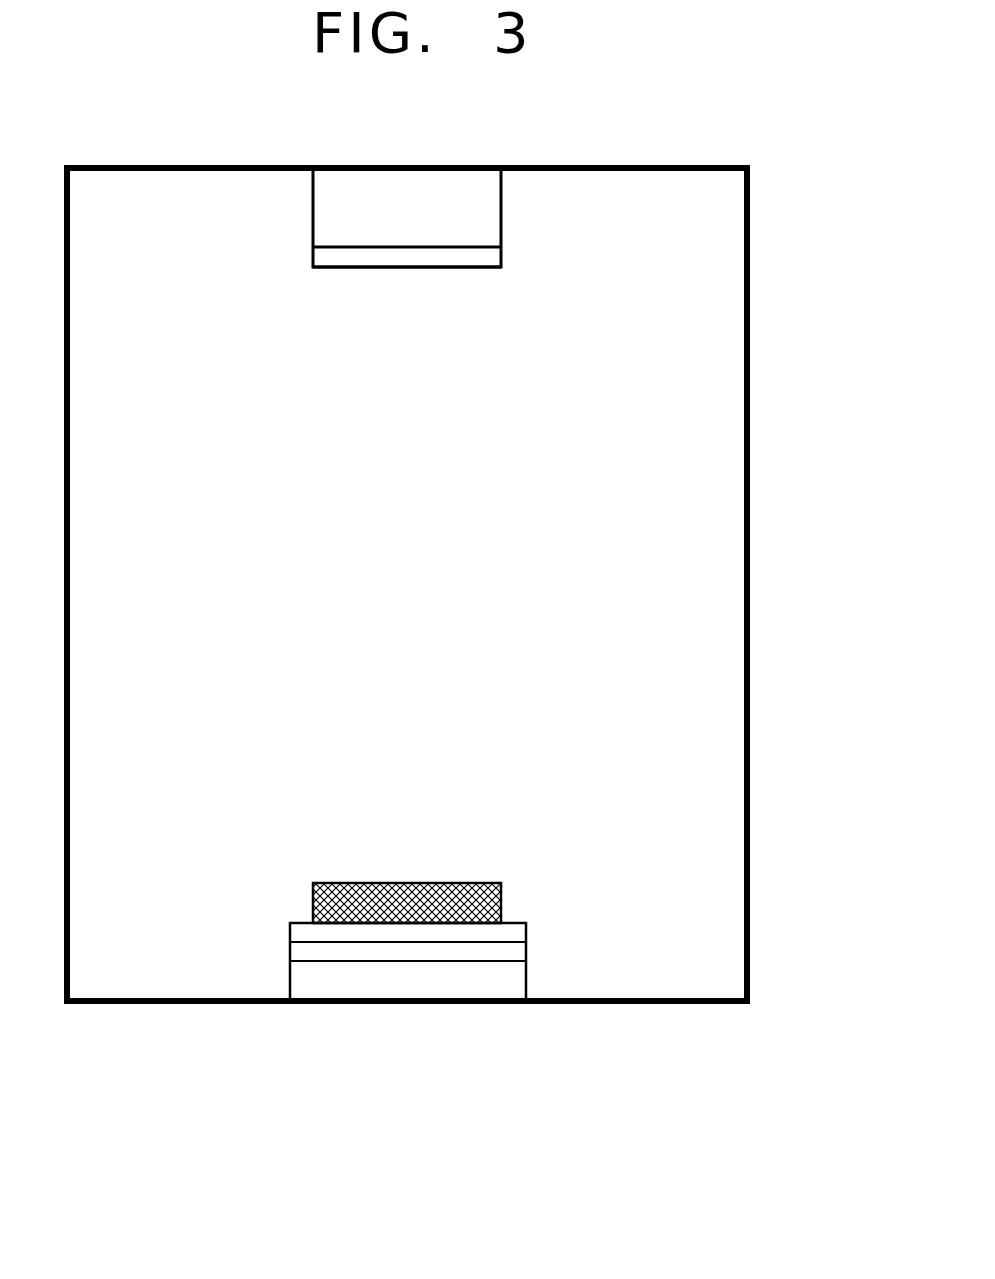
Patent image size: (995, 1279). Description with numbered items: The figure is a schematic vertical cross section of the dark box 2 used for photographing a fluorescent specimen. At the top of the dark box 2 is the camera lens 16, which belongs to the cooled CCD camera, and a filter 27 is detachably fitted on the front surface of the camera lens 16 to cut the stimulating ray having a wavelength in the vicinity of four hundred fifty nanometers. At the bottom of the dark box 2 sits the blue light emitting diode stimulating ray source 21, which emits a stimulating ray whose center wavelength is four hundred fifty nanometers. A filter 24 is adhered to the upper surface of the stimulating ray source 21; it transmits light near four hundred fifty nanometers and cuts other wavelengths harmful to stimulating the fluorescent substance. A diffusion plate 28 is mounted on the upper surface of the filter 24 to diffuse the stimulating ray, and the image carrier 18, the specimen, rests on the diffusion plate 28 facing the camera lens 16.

The dark box 2 is at (768, 615).
The camera lens 16 is at (475, 210).
The filter 27 is at (403, 256).
The image carrier 18 is at (463, 895).
The blue light emitting diode stimulating ray source 21 is at (420, 985).
The diffusion plate 28 is at (310, 933).
The filter 24 is at (506, 953).